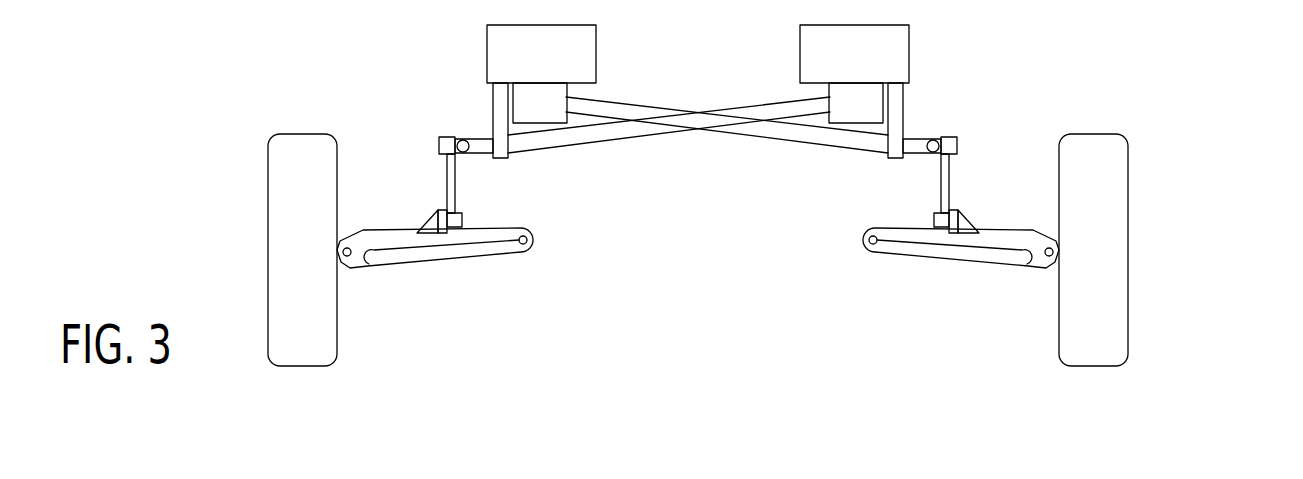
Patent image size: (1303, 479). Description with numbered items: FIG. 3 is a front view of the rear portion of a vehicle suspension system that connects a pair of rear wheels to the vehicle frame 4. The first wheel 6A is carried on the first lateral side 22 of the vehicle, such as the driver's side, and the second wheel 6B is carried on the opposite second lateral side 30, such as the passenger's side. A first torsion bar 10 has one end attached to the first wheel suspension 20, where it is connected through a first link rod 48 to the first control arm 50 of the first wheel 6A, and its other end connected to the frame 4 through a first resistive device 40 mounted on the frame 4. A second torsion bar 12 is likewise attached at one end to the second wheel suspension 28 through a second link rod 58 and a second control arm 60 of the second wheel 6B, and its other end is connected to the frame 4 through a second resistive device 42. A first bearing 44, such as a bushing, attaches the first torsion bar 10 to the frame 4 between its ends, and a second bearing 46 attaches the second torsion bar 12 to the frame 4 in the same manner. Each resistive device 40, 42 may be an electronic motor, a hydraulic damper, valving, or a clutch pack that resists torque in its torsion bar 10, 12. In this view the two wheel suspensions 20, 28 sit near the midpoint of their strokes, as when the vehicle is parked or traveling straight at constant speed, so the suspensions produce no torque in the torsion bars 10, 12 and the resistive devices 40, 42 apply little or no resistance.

The frame 4 is at (508, 45).
The first resistive device 40 is at (547, 97).
The second resistive device 42 is at (849, 97).
The first bearing 44 is at (899, 123).
The second bearing 46 is at (497, 123).
The first torsion bar 10 is at (777, 134).
The second torsion bar 12 is at (607, 134).
The first link rod 48 is at (950, 185).
The second link rod 58 is at (447, 187).
The first control arm 50 is at (943, 249).
The second control arm 60 is at (450, 256).
The first wheel 6A is at (1108, 146).
The second wheel 6B is at (291, 147).
The first wheel suspension 20 is at (918, 94).
The first lateral side 22 is at (1077, 200).
The second wheel suspension 28 is at (480, 94).
The second lateral side 30 is at (324, 221).